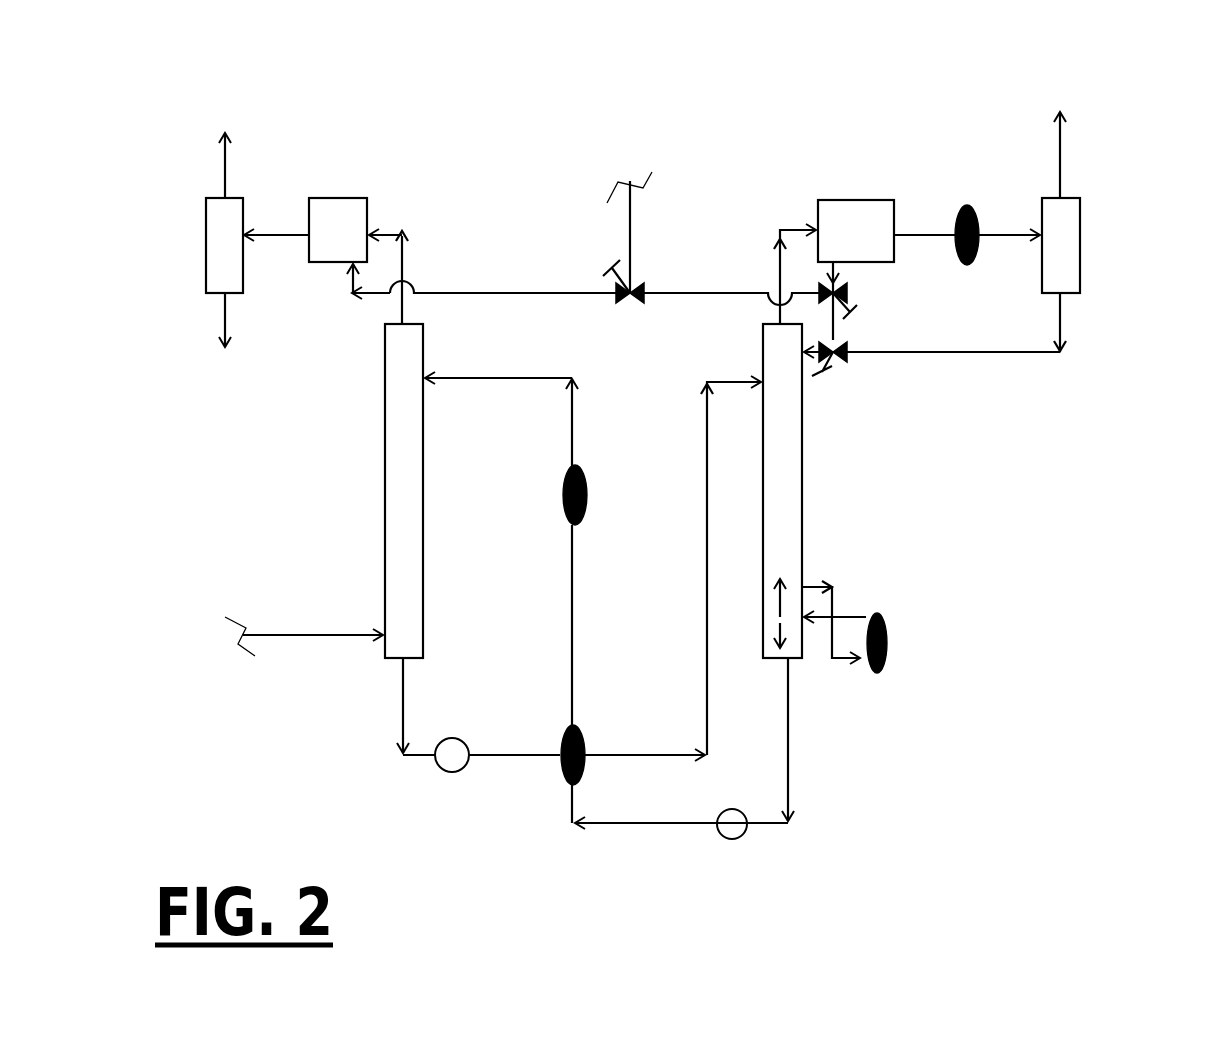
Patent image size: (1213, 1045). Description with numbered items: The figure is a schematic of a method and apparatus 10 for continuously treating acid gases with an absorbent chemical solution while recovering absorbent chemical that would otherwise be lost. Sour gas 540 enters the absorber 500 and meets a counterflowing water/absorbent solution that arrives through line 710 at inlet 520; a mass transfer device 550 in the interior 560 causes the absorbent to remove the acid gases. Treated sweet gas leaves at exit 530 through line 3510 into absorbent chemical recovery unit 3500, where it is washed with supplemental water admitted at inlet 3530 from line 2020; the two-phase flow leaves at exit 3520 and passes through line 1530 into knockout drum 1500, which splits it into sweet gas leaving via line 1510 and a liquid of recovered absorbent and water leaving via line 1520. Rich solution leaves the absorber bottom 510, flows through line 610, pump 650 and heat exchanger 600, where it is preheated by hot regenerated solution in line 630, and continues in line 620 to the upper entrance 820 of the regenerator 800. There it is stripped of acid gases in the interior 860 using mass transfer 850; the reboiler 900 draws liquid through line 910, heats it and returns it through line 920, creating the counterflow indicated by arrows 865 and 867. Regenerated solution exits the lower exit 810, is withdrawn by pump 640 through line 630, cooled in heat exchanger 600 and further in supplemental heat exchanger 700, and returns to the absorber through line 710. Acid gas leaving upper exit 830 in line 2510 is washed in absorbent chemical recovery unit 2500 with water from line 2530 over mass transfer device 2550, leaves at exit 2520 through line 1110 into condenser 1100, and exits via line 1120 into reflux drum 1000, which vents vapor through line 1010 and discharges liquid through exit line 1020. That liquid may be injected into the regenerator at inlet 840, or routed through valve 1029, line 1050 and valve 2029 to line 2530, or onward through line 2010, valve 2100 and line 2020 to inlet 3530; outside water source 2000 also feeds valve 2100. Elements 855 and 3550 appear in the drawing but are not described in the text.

The method and apparatus 10 is at (517, 130).
The absorber 500 is at (391, 506).
The absorber bottom exit 510 is at (407, 662).
The absorber inlet 520 is at (428, 372).
The absorber exit 530 is at (408, 322).
The sour gas 540 is at (297, 633).
The mass transfer device 550 is at (402, 457).
The absorber interior 560 is at (398, 397).
The heat exchanger 600 is at (587, 740).
The line 610 is at (513, 760).
The line 620 is at (625, 757).
The line 630 is at (680, 823).
The pump 640 is at (568, 653).
The pump 650 is at (458, 758).
The supplemental heat exchanger 700 is at (565, 493).
The line 710 is at (572, 433).
The regenerator 800 is at (799, 473).
The regenerator lower exit 810 is at (784, 668).
The regenerator upper entrance 820 is at (762, 378).
The regenerator upper exit 830 is at (780, 318).
The regenerator inlet 840 is at (803, 362).
The mass transfer device 850 is at (772, 497).
The side draw line 855 is at (803, 583).
The regenerator interior 860 is at (777, 398).
The vapor counterflow arrow 865 is at (770, 603).
The counterflow arrow 867 is at (770, 633).
The reboiler 900 is at (888, 640).
The line 910 is at (850, 660).
The line 920 is at (833, 612).
The reflux drum 1000 is at (1057, 238).
The line 1010 is at (1063, 158).
The exit line 1020 is at (1063, 320).
The valve 1029 is at (862, 382).
The line 1050 is at (840, 330).
The heat exchanger/condenser 1100 is at (967, 207).
The line 1110 is at (948, 235).
The line 1120 is at (1000, 238).
The knockout drum 1500 is at (218, 235).
The line 1510 is at (222, 168).
The line 1520 is at (227, 317).
The line 1530 is at (255, 232).
The outside water source 2000 is at (628, 228).
The line 2010 is at (693, 292).
The line 2020 is at (497, 293).
The valve 2029 is at (860, 308).
The valve 2100 is at (607, 272).
The absorbent chemical recovery unit 2500 is at (897, 173).
The line 2510 is at (777, 255).
The recovery unit exit 2520 is at (896, 242).
The line 2530 is at (838, 285).
The mass transfer device 2550 is at (843, 208).
The absorbent chemical recovery unit 3500 is at (349, 208).
The line 3510 is at (378, 232).
The recovery unit exit 3520 is at (301, 232).
The recovery unit inlet 3530 is at (350, 280).
The adsorbent bed 3550 is at (320, 247).